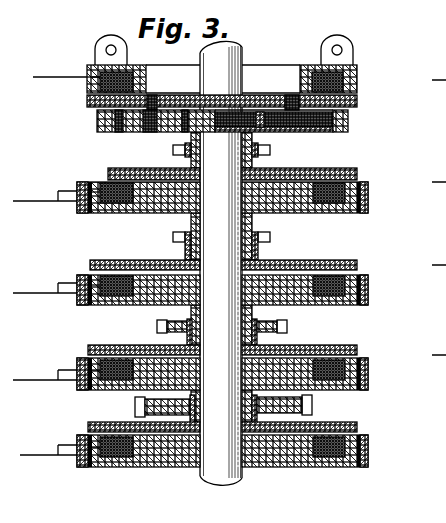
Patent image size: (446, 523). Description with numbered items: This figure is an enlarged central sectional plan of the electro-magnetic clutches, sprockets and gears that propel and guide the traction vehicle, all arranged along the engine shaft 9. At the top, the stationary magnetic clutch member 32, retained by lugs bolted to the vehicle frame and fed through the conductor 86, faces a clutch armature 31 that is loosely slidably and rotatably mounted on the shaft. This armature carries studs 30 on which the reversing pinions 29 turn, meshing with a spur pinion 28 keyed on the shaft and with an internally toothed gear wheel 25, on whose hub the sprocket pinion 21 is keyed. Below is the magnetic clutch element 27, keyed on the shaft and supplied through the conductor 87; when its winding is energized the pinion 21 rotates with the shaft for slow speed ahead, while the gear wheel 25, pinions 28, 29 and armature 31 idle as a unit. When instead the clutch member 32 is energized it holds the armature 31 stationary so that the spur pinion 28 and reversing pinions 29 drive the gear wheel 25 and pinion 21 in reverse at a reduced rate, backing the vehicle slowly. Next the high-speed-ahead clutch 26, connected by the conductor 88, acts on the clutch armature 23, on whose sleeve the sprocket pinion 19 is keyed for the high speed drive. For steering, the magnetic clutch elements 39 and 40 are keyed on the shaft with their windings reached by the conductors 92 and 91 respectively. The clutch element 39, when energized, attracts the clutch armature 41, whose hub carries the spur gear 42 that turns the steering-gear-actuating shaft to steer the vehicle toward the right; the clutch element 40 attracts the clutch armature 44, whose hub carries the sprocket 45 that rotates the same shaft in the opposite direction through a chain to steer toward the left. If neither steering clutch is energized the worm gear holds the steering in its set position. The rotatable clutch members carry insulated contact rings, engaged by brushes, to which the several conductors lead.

The engine shaft 9 is at (220, 463).
The sprocket pinion 19 is at (173, 237).
The sprocket pinion 21 is at (173, 150).
The clutch armature 23 is at (297, 260).
The internally toothed gear wheel 25 is at (348, 126).
The high-speed-ahead clutch 26 is at (347, 305).
The magnetic clutch element 27 is at (347, 215).
The spur pinion 28 is at (260, 120).
The reversing pinions 29 is at (97, 117).
The studs 30 is at (134, 130).
The clutch armature 31 is at (357, 100).
The stationary magnetic clutch member 32 is at (360, 74).
The magnetic clutch element 39 is at (352, 467).
The magnetic clutch element 40 is at (353, 392).
The clutch armature 41 is at (357, 428).
The spur gear 42 is at (135, 405).
The clutch armature 44 is at (307, 347).
The sprocket 45 is at (157, 323).
The conductor 86 is at (47, 77).
The conductor 87 is at (49, 201).
The conductor 88 is at (50, 293).
The conductor 91 is at (48, 380).
The conductor 92 is at (42, 455).